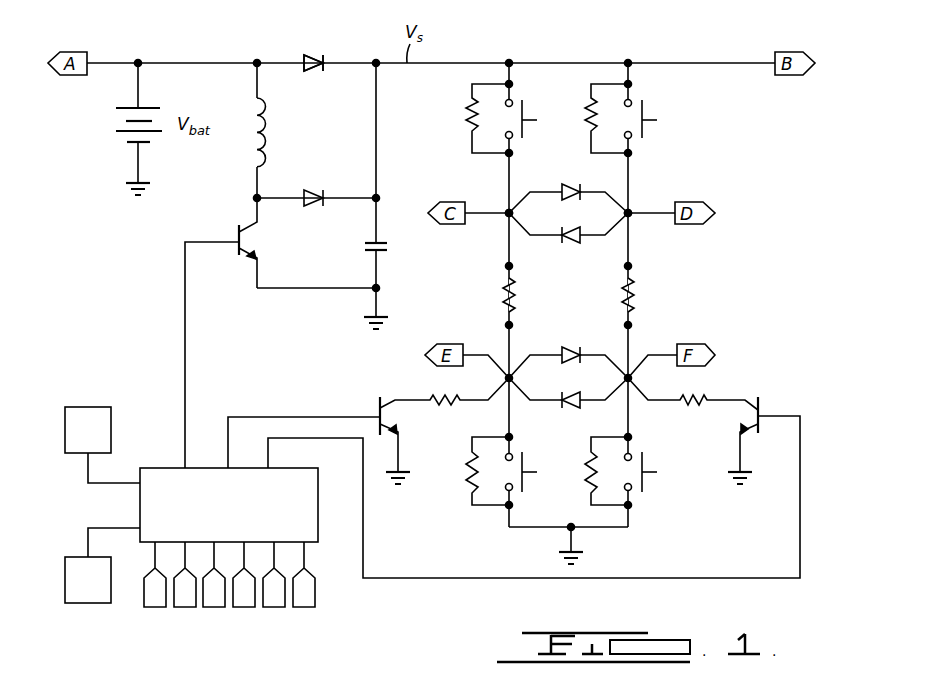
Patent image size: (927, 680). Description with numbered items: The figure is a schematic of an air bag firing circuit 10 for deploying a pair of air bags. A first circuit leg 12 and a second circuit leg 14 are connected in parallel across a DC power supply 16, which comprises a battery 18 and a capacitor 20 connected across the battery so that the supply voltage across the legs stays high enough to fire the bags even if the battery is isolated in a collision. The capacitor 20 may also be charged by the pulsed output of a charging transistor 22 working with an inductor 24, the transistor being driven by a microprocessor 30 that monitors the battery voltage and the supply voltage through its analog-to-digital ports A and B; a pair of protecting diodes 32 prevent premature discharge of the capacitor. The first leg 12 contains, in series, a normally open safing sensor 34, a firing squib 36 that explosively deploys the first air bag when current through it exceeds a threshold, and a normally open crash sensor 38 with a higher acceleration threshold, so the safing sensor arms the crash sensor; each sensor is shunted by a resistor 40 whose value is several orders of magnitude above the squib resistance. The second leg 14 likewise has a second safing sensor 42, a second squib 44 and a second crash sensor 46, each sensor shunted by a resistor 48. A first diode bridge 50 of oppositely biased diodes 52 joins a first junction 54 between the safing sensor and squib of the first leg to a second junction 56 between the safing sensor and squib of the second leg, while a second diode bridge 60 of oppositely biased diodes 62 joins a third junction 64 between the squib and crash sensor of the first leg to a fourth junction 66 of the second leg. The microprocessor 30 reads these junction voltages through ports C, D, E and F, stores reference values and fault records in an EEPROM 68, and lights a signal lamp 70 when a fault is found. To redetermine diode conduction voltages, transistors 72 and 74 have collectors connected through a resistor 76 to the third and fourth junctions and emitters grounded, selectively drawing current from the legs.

The firing circuit 10 is at (812, 235).
The first circuit leg 12 is at (511, 70).
The second circuit leg 14 is at (630, 70).
The DC power supply 16 is at (292, 50).
The battery 18 is at (112, 106).
The capacitor 20 is at (388, 246).
The charging transistor 22 is at (248, 244).
The inductor 24 is at (268, 128).
The microprocessor 30 is at (318, 522).
The protecting diodes 32 is at (326, 70).
The safing sensor 34 is at (524, 130).
The firing squib 36 is at (505, 300).
The crash sensor 38 is at (524, 482).
The shunting resistor 40 is at (468, 117).
The second safing sensor 42 is at (644, 130).
The second squib 44 is at (632, 297).
The second crash sensor 46 is at (644, 482).
The shunting resistor 48 is at (588, 118).
The first diode bridge 50 is at (570, 221).
The diodes 52 is at (582, 190).
The first junction 54 is at (507, 216).
The second junction 56 is at (630, 216).
The second diode bridge 60 is at (570, 360).
The diodes 62 is at (546, 338).
The third junction 64 is at (513, 379).
The fourth junction 66 is at (631, 380).
The EEPROM 68 is at (111, 418).
The signal lamp 70 is at (65, 574).
The transistor 72 is at (400, 420).
The transistor 74 is at (745, 418).
The resistor 76 is at (432, 397).